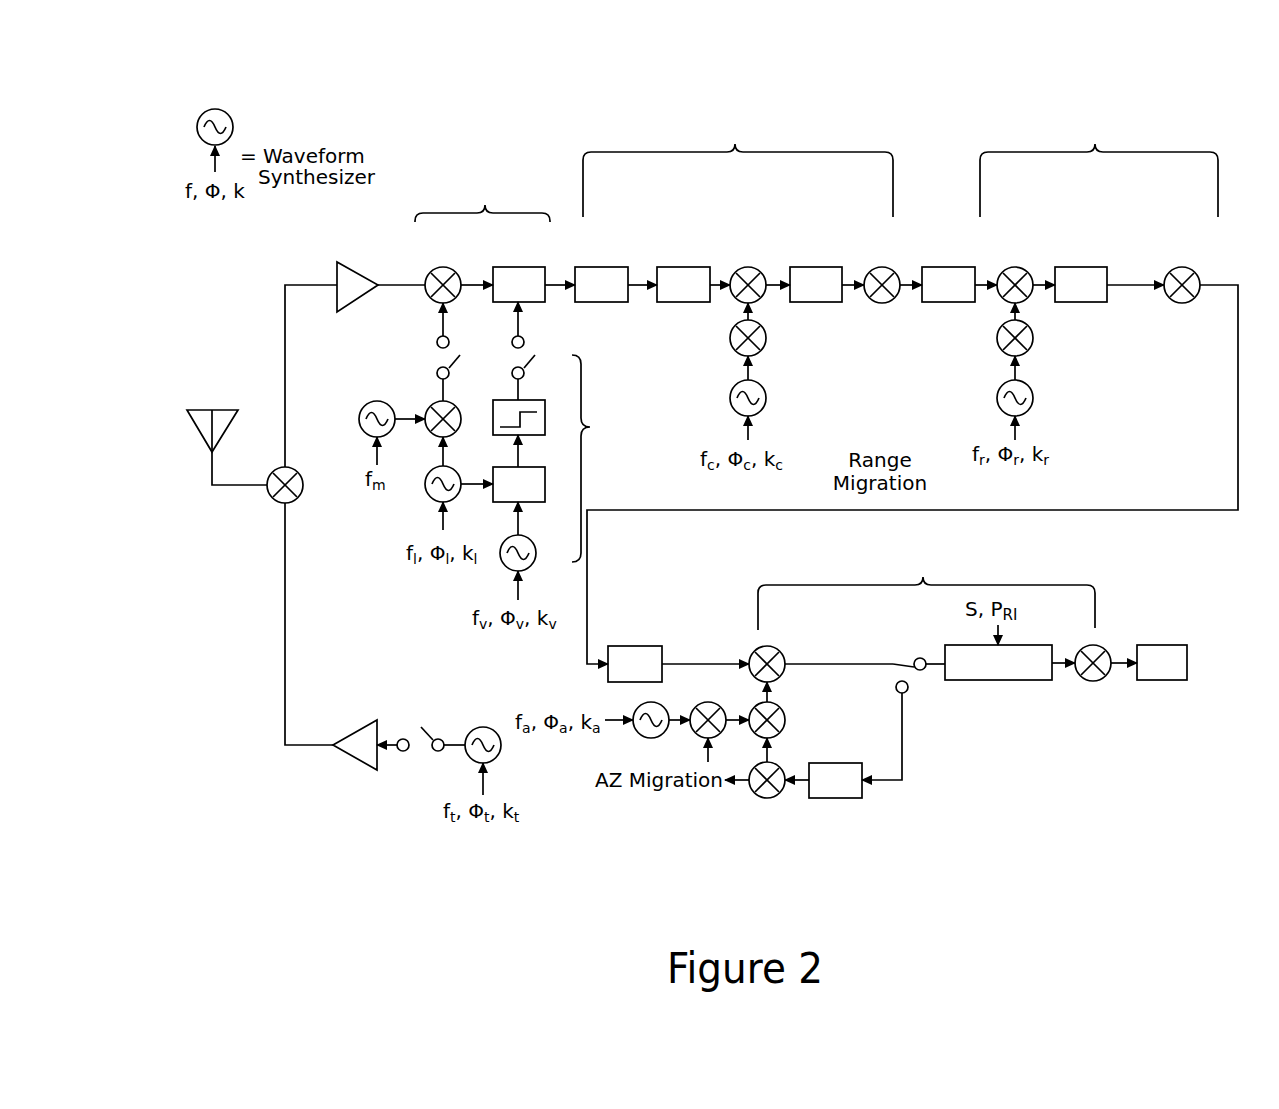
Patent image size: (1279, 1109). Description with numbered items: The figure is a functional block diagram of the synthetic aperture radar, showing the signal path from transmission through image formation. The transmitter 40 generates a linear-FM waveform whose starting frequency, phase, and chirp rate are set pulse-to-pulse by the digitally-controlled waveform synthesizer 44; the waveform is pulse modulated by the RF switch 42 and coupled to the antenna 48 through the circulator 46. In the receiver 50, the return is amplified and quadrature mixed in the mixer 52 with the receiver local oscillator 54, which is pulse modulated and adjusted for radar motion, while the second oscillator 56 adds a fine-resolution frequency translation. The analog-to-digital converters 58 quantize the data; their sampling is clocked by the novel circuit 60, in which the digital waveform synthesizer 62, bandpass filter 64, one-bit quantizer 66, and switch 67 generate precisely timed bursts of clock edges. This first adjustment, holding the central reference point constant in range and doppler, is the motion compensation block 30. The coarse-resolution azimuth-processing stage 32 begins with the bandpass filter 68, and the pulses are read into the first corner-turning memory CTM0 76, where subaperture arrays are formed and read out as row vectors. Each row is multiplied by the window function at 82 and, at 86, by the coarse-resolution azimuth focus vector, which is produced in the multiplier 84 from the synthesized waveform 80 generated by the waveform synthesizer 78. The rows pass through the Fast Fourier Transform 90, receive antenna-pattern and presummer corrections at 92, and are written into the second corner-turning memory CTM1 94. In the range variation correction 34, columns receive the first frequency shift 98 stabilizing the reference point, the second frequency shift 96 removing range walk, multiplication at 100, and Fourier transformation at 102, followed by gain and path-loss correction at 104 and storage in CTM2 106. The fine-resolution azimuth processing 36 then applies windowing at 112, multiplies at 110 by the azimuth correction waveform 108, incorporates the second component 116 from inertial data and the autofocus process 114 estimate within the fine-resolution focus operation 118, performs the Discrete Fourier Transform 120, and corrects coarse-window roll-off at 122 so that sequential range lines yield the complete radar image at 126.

The motion compensation block 30 is at (482, 196).
The coarse-resolution azimuth-processing stage 32 is at (738, 162).
The range variation correction 34 is at (1099, 162).
The fine-resolution azimuth processing 36 is at (926, 586).
The transmitter 40 is at (352, 760).
The RF switch 42 is at (421, 759).
The digitally-controlled waveform synthesizer 44 is at (483, 791).
The circulator 46 is at (268, 506).
The antenna 48 is at (200, 405).
The receiver 50 is at (340, 271).
The mixer 52 is at (443, 266).
The receiver local oscillator 54 is at (425, 498).
The second oscillator 56 is at (376, 403).
The analog-to-digital converters 58 is at (519, 266).
The sampling clock circuit 60 is at (600, 458).
The digital waveform synthesizer 62 is at (533, 568).
The bandpass filter 64 is at (533, 506).
The one-bit quantizer 66 is at (535, 437).
The switch 67 is at (537, 372).
The bandpass filter 68 is at (601, 266).
The first corner-turning memory CTM0 76 is at (683, 266).
The waveform synthesizer 78 is at (768, 398).
The synthesized waveform 80 is at (762, 372).
The window function multiplication 82 is at (768, 340).
The multiplier 84 is at (762, 317).
The focus vector multiplier 86 is at (748, 266).
The Fast Fourier Transform 90 is at (816, 266).
The correction multiplier 92 is at (882, 304).
The second corner-turning memory CTM1 94 is at (948, 266).
The second frequency shift 96 is at (998, 388).
The first frequency shift 98 is at (997, 334).
The column vector multiplier 100 is at (1015, 266).
The range Fourier transform 102 is at (1080, 266).
The range correction 104 is at (1182, 302).
The third corner-turning memory CTM2 106 is at (668, 652).
The azimuth correction waveform 108 is at (604, 735).
The first component multiplier 110 is at (687, 735).
The windowing operation 112 is at (765, 800).
The autofocus process 114 is at (836, 764).
The second focus component 116 is at (787, 706).
The fine-resolution focus operation 118 is at (787, 650).
The Discrete Fourier Transform 120 is at (998, 681).
The coarse-window roll-off correction 122 is at (1093, 681).
The radar image output 126 is at (1162, 681).